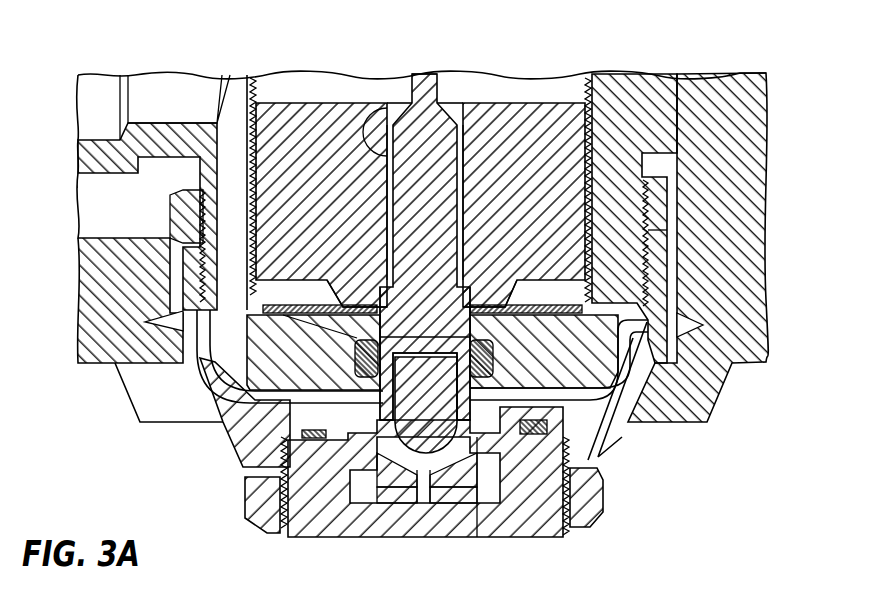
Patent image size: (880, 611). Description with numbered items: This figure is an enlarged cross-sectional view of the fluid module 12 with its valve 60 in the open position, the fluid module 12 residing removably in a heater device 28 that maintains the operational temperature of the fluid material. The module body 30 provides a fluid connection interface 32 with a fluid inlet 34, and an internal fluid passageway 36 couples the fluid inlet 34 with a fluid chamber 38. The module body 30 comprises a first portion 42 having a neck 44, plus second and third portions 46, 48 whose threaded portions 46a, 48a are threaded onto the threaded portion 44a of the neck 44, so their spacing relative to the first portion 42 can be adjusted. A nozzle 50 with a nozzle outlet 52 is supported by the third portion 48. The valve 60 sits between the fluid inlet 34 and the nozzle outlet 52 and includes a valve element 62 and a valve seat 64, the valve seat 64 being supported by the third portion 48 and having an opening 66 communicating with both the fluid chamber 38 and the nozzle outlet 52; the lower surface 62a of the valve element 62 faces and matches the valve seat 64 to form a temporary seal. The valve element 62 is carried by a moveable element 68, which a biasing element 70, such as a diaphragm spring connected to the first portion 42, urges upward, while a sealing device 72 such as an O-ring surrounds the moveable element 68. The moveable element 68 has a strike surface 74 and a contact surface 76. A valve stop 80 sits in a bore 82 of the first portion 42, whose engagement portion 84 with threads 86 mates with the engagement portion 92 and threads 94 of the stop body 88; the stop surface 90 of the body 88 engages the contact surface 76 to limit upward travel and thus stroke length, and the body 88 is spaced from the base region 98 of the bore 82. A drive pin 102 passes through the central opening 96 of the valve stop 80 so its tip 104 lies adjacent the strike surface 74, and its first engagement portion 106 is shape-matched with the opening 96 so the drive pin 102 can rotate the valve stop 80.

The fluid module 12 is at (58, 216).
The heater device 28 is at (758, 110).
The module body 30 is at (76, 153).
The fluid connection interface 32 is at (70, 104).
The fluid inlet 34 is at (179, 99).
The internal fluid passageway 36 is at (228, 211).
The fluid chamber 38 is at (318, 405).
The first portion 42 is at (82, 166).
The neck 44 is at (660, 238).
The threaded portion 44a is at (652, 262).
The second portion 46 is at (680, 207).
The threaded portion 46a is at (646, 168).
The third portion 48 is at (652, 300).
The threaded portion 48a is at (632, 415).
The nozzle 50 is at (465, 505).
The nozzle outlet 52 is at (423, 490).
The valve 60 is at (369, 432).
The valve element 62 is at (415, 416).
The lower surface 62a is at (410, 472).
The valve seat 64 is at (386, 493).
The opening 66 is at (437, 497).
The moveable element 68 is at (487, 278).
The biasing element 70 is at (290, 300).
The sealing device 72 is at (528, 425).
The strike surface 74 is at (432, 330).
The contact surface 76 is at (356, 284).
The valve stop 80 is at (495, 100).
The bore 82 is at (266, 82).
The engagement portion 84 is at (262, 98).
The threads 86 is at (266, 125).
The body 88 is at (480, 103).
The stop surface 90 is at (567, 286).
The engagement portion 92 is at (598, 128).
The threads 94 is at (628, 150).
The opening 96 is at (390, 123).
The base region 98 is at (325, 306).
The drive pin 102 is at (425, 80).
The tip 104 is at (418, 276).
The first engagement portion 106 is at (375, 108).